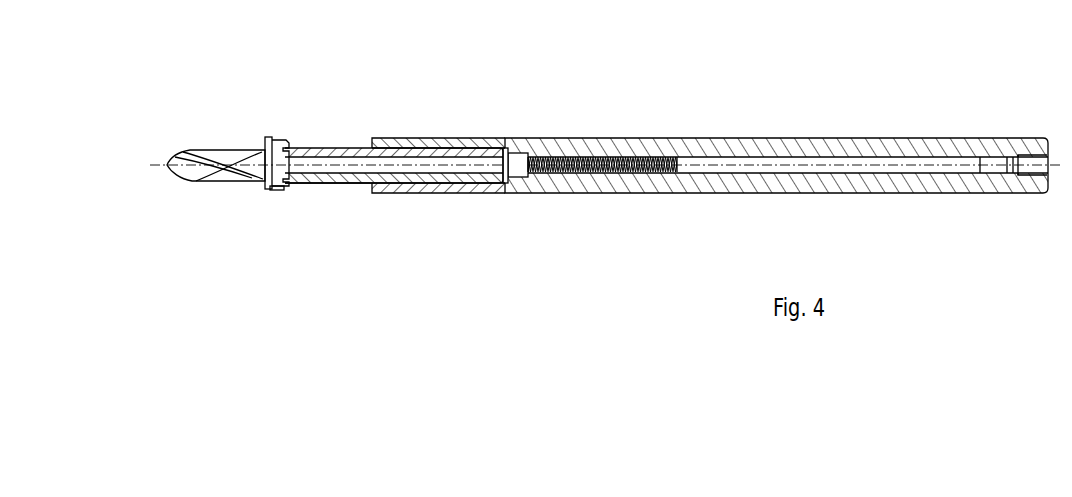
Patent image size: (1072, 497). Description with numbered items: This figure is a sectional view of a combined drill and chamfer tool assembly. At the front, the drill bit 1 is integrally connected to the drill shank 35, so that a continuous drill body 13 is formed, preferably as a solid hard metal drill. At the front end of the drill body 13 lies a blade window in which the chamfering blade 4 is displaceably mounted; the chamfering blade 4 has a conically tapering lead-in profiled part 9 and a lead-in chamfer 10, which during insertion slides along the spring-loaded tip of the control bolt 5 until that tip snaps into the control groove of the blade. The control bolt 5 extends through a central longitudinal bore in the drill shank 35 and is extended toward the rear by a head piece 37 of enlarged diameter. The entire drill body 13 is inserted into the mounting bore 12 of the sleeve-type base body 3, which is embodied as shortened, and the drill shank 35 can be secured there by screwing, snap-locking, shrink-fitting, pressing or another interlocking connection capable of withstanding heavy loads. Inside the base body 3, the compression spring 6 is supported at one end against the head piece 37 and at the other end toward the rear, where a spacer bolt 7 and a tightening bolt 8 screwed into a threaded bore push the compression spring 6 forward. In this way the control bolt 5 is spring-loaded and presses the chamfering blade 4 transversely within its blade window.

The drill bit 1 is at (206, 148).
The base body 3 is at (418, 138).
The chamfering blade 4 is at (276, 193).
The control bolt 5 is at (508, 160).
The compression spring 6 is at (585, 156).
The spacer bolt 7 is at (831, 155).
The tightening bolt 8 is at (1018, 152).
The lead-in profiled part 9 is at (267, 136).
The lead-in chamfer 10 is at (284, 136).
The mounting bore 12 is at (458, 148).
The drill body 13 is at (330, 130).
The drill shank 35 is at (352, 180).
The head piece 37 is at (516, 168).